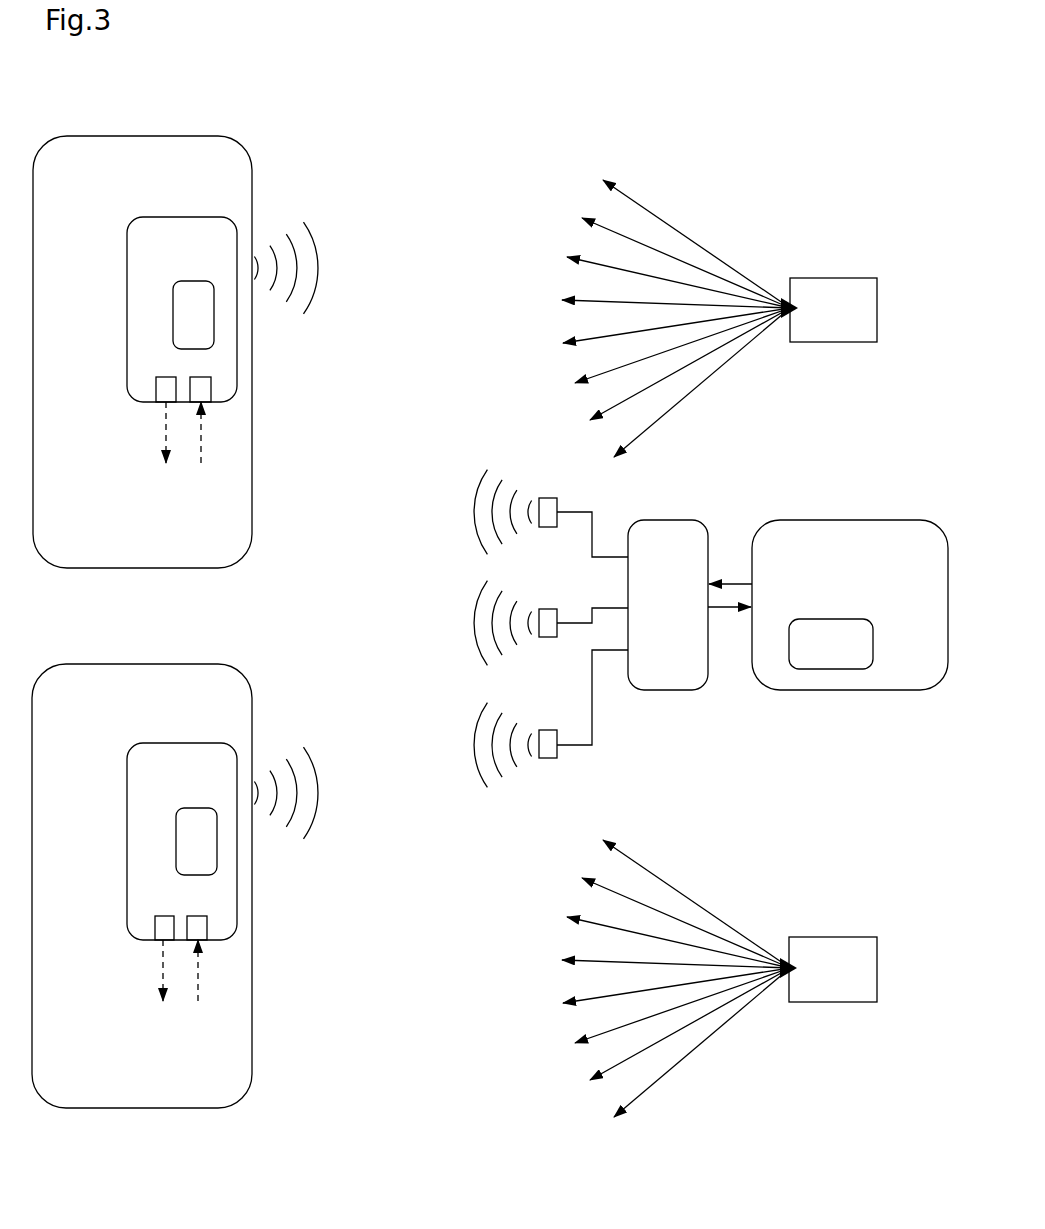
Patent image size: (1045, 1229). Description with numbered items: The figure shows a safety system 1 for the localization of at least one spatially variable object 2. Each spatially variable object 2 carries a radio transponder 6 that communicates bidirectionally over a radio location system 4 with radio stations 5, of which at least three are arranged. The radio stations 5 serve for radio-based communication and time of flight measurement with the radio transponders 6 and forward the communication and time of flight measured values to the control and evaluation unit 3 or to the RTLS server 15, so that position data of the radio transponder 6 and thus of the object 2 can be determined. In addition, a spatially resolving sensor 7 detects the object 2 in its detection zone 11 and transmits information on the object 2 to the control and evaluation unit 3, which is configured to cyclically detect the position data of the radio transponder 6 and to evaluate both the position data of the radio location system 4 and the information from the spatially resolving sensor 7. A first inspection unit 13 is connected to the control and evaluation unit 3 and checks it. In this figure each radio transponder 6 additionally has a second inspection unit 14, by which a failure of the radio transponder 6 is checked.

The safety system 1 is at (678, 78).
The spatially variable object 2 is at (253, 178).
The control and evaluation unit 3 is at (882, 520).
The radio location system 4 is at (360, 333).
The radio station 5 is at (550, 497).
The radio transponder 6 is at (160, 218).
The spatially resolving sensor 7 is at (833, 277).
The detection zone 11 is at (703, 203).
The first inspection unit 13 is at (813, 619).
The second inspection unit 14 is at (173, 295).
The RTLS server 15 is at (663, 519).